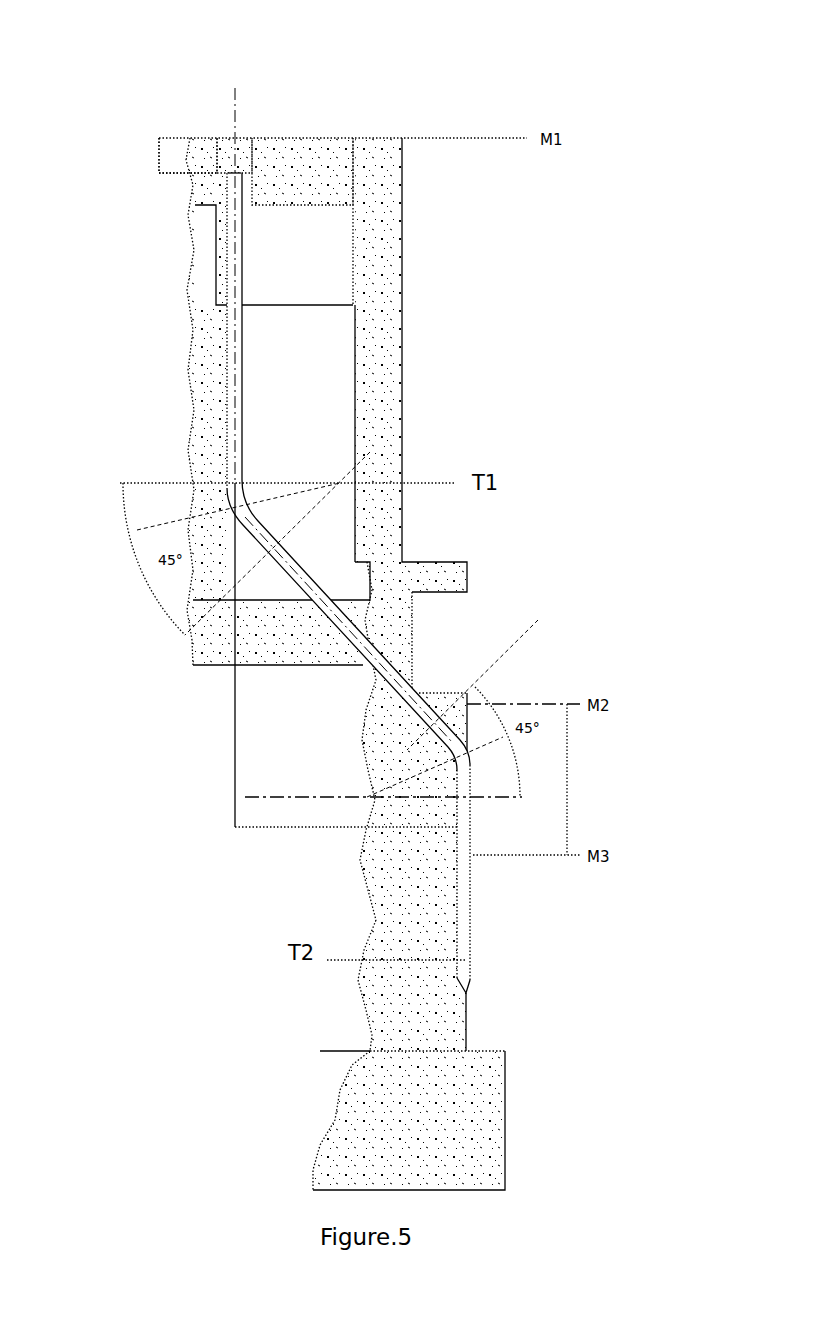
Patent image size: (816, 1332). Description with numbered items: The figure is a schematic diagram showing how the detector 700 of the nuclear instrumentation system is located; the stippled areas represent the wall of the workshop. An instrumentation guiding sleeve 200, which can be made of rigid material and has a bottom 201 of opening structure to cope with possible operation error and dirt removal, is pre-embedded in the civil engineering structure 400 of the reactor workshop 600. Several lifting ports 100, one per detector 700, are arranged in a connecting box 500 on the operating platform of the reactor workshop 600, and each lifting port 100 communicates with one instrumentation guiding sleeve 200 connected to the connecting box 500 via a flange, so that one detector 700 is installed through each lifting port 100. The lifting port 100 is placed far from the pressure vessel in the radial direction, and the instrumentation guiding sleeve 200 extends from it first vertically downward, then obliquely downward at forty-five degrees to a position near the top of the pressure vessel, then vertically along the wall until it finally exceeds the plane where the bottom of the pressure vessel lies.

The lifting port 100 is at (168, 163).
The instrumentation guiding sleeve 200 is at (230, 287).
The bottom 201 is at (470, 993).
The civil engineering structure 400 is at (383, 193).
The connecting box 500 is at (182, 148).
The reactor workshop 600 is at (307, 182).
The detector 700 is at (223, 160).